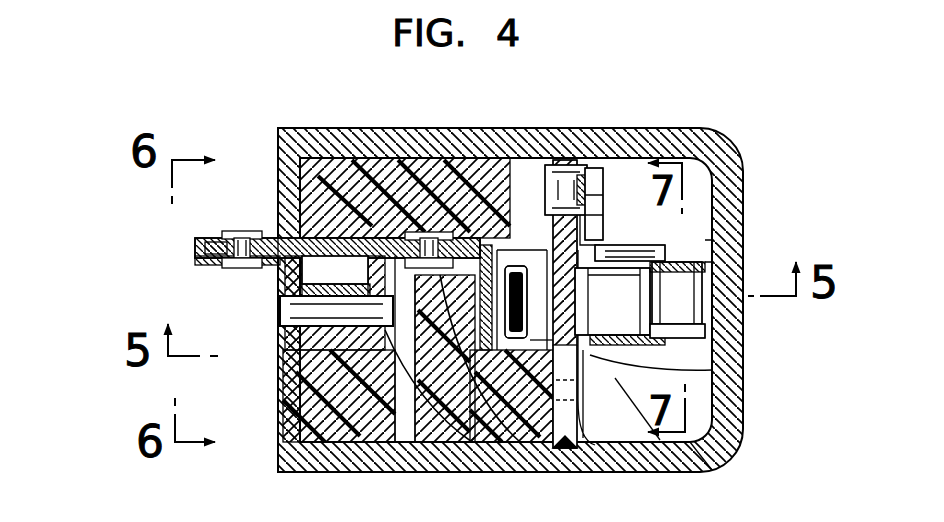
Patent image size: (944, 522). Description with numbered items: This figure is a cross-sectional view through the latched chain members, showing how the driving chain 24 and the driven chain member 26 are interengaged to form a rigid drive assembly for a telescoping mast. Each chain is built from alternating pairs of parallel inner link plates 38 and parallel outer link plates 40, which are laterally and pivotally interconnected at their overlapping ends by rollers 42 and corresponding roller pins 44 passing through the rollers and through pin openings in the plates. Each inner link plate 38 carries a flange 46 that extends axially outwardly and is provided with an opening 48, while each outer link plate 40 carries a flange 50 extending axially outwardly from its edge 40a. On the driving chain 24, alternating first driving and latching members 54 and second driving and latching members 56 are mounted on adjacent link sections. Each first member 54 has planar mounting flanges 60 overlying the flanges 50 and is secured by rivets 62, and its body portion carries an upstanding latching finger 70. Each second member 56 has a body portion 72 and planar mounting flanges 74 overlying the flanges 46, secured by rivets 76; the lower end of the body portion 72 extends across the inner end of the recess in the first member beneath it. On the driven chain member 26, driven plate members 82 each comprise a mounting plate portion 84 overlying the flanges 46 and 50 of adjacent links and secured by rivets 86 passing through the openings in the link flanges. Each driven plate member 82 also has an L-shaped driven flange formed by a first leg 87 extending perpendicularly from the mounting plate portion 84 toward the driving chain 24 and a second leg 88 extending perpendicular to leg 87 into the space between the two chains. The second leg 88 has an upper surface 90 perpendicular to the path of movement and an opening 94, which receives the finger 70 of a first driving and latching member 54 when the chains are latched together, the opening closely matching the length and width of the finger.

The driving chain 24 is at (737, 173).
The driven chain member 26 is at (332, 236).
The inner link plates 38 is at (295, 342).
The outer link plates 40 is at (300, 344).
The edge of outer link plate 40a is at (700, 358).
The rollers 42 is at (300, 412).
The roller pins 44 is at (283, 311).
The flange 46 is at (208, 257).
The opening 48 is at (240, 268).
The flange 50 is at (625, 446).
The first driving and latching members 54 is at (565, 452).
The second driving and latching members 56 is at (562, 188).
The planar mounting flanges 60 is at (590, 440).
The rivets 62 is at (688, 458).
The latching finger 70 is at (516, 266).
The body portion 72 is at (594, 292).
The planar mounting flanges 74 is at (572, 188).
The rivets 76 is at (612, 212).
The driven plate members 82 is at (280, 236).
The mounting plate portion 84 is at (290, 240).
The rivets 86 is at (240, 238).
The first leg 87 is at (458, 440).
The second leg 88 is at (494, 300).
The upper surface 90 is at (542, 450).
The opening 94 is at (500, 440).